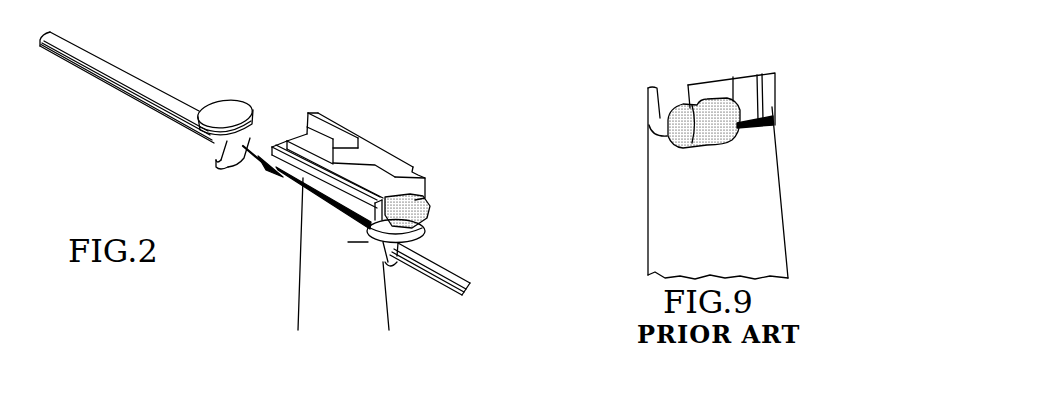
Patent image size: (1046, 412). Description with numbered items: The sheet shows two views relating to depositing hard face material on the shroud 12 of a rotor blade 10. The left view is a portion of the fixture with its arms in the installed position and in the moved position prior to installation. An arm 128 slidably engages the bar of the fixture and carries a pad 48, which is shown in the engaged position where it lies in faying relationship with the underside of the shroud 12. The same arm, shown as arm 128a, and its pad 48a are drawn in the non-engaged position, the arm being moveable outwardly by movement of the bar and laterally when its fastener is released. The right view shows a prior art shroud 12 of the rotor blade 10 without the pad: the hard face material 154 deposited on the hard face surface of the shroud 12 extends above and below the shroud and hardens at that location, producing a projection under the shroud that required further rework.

In FIG. 2, the rotor blade 10 is at (352, 290).
In FIG. 9, the rotor blade 10 is at (735, 183).
In FIG. 2, the shroud 12 is at (357, 147).
In FIG. 9, the shroud 12 is at (740, 73).
In FIG. 2, the pad 48 is at (418, 212).
In FIG. 2, the pad 48a is at (223, 142).
In FIG. 2, the arm 128 is at (447, 268).
In FIG. 2, the arm 128a is at (95, 62).
In FIG. 9, the hard face material 154 is at (727, 118).